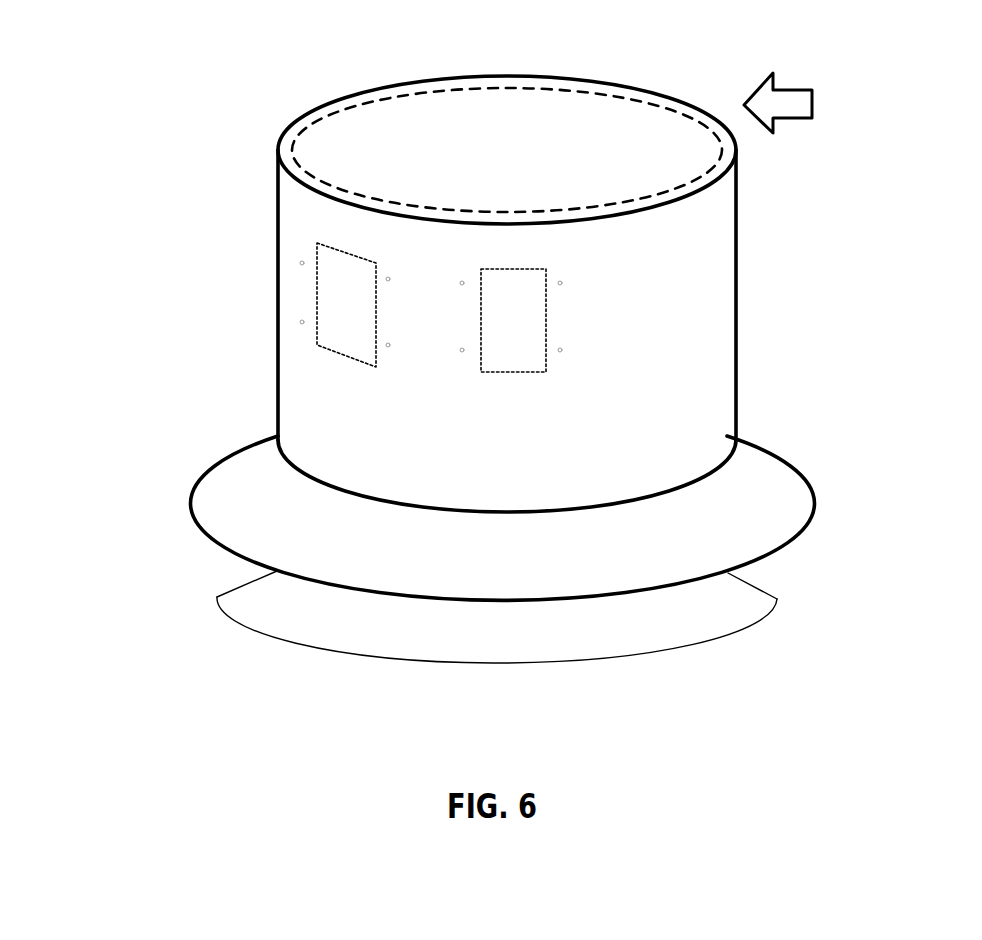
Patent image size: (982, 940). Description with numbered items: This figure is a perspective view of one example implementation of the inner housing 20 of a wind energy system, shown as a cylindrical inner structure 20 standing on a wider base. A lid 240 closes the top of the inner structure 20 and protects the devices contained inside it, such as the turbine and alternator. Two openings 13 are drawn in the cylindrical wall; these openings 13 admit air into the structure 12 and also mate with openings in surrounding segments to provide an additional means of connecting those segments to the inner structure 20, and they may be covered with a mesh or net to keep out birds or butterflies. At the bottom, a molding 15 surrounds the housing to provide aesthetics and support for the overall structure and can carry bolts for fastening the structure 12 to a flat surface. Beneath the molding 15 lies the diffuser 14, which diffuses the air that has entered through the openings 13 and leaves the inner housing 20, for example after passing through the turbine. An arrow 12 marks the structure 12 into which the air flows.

The structure 12 is at (800, 103).
The openings 13 is at (431, 334).
The diffuser 14 is at (709, 609).
The molding 15 is at (184, 500).
The inner housing 20 is at (267, 168).
The lid 240 is at (370, 113).